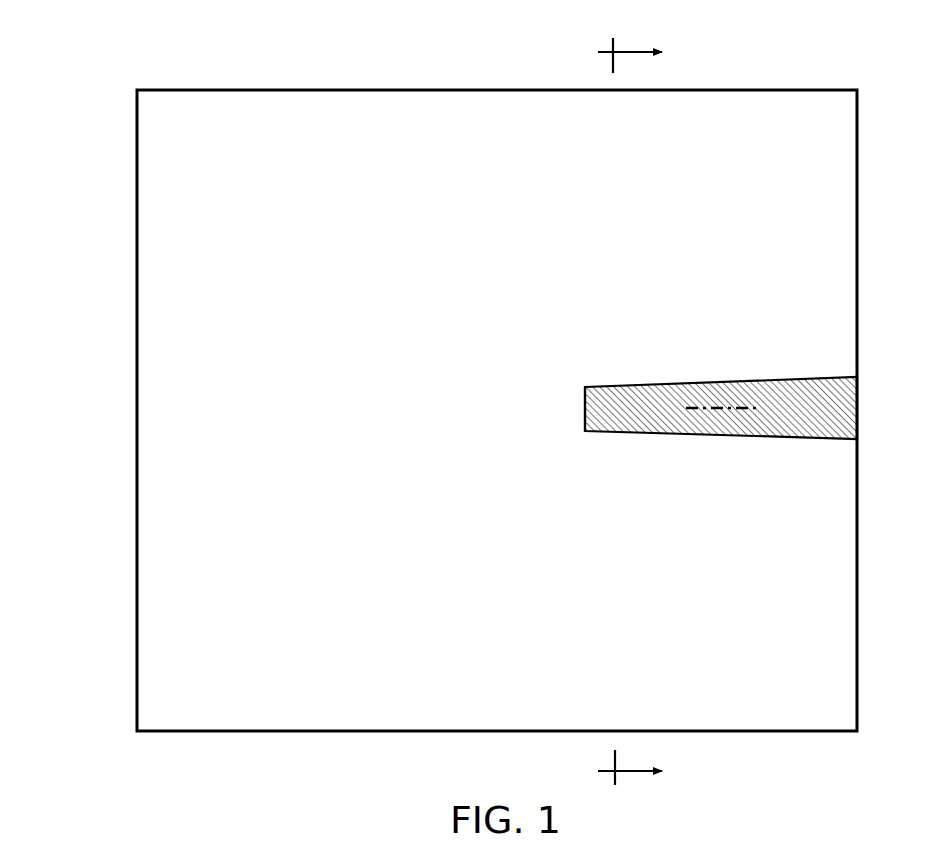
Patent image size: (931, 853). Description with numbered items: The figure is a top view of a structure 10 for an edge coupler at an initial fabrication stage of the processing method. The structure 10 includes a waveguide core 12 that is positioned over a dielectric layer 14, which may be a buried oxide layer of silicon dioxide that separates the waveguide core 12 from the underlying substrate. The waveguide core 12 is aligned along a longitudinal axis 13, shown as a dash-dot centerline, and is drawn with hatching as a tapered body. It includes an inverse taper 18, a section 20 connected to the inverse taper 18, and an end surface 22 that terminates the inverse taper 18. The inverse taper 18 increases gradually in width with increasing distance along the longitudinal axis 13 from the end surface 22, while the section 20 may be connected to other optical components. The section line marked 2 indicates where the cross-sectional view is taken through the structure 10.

The structure 10 is at (116, 70).
The waveguide core 12 is at (782, 266).
The longitudinal axis 13 is at (718, 408).
The dielectric layer 14 is at (188, 670).
The inverse taper 18 is at (662, 413).
The section 20 is at (832, 418).
The end surface 22 is at (584, 414).
The section line 2- 2 is at (649, 415).